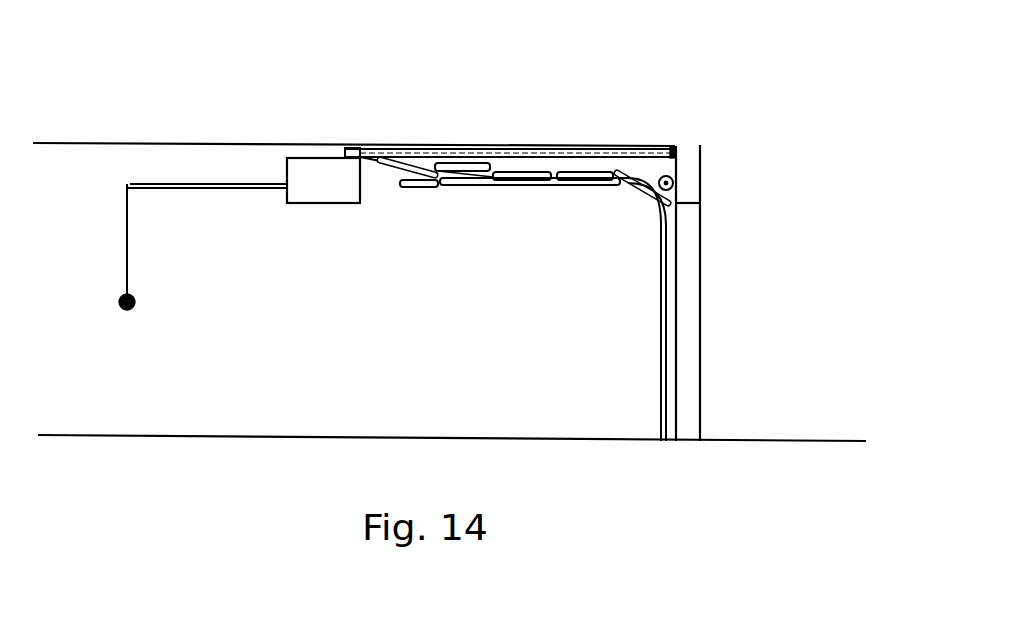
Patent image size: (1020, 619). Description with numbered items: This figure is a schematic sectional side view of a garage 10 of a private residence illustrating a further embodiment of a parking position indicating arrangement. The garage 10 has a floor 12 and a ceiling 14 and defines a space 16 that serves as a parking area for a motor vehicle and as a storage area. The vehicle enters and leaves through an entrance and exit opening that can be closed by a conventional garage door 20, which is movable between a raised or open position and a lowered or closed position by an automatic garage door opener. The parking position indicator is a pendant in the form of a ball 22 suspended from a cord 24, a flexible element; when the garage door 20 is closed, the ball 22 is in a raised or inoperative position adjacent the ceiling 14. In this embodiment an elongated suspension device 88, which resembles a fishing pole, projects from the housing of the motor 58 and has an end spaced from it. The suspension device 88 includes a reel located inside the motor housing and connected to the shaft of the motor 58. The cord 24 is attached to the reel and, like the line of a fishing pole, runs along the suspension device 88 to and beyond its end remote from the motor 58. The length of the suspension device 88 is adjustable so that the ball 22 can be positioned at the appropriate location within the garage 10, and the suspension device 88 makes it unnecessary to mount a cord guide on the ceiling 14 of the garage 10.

The garage 10 is at (768, 98).
The floor 12 is at (57, 435).
The ceiling 14 is at (60, 143).
The space 16 is at (453, 350).
The garage door 20 is at (535, 187).
The ball 22 is at (136, 304).
The cord 24 is at (130, 243).
The motor 58 is at (347, 207).
The suspension device 88 is at (245, 193).